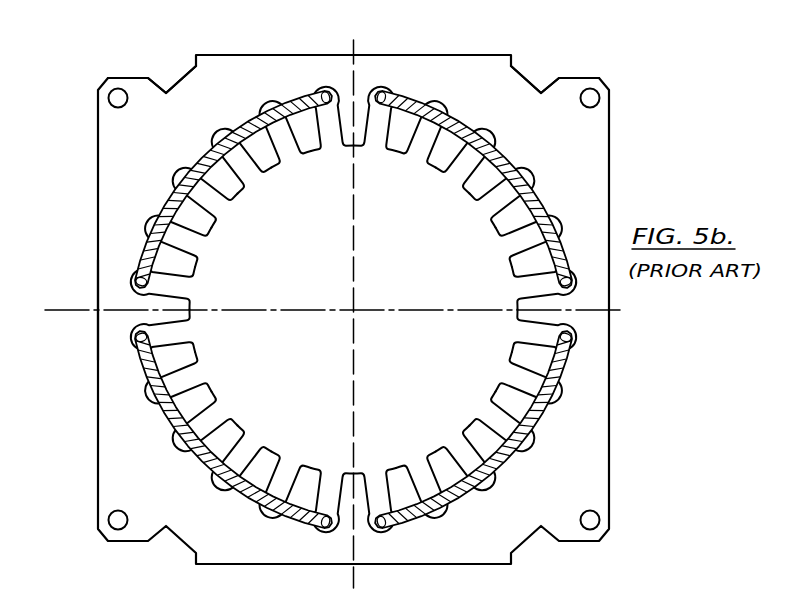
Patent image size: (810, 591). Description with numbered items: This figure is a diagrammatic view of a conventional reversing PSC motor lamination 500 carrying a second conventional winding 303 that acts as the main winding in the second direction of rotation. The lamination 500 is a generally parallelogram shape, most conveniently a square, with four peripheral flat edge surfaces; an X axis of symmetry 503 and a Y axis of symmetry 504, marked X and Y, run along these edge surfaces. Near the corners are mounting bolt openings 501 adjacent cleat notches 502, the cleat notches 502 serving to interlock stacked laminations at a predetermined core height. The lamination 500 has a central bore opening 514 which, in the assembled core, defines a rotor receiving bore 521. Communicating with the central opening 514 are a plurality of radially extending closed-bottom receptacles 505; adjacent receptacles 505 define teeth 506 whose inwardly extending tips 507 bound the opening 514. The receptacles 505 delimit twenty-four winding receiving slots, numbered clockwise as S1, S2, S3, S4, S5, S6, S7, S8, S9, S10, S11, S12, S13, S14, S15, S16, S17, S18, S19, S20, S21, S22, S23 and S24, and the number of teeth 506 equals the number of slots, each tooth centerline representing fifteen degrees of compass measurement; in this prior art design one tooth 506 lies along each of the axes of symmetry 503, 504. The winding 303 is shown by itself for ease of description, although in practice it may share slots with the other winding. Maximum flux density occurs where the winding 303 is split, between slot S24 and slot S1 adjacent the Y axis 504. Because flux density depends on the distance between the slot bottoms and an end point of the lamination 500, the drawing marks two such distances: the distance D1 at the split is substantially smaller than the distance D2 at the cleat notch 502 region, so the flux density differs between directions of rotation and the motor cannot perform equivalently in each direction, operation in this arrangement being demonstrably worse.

The lamination 500 is at (610, 196).
The mounting bolt openings 501 is at (112, 98).
The cleat notches 502 is at (180, 80).
The X axis of symmetry 503 is at (96, 300).
The Y axis of symmetry 504 is at (375, 55).
The receptacles 505 is at (543, 412).
The teeth 506 is at (487, 198).
The tips 507 is at (507, 354).
The winding 303 is at (258, 112).
The central bore opening 514 is at (422, 279).
The rotor receiving bore 521 is at (327, 332).
The distance D1 is at (377, 90).
The distance D2 is at (526, 84).
The X axis X is at (323, 310).
The Y axis Y is at (354, 42).
The slot S1 is at (372, 148).
The slot S2 is at (414, 162).
The slot S3 is at (450, 183).
The slot S4 is at (479, 211).
The slot S5 is at (509, 249).
The slot S6 is at (514, 289).
The slot S7 is at (515, 331).
The slot S8 is at (499, 369).
The slot S9 is at (487, 410).
The slot S10 is at (450, 436).
The slot S11 is at (415, 456).
The slot S12 is at (376, 461).
The slot S13 is at (331, 473).
The slot S14 is at (291, 463).
The slot S15 is at (256, 437).
The slot S16 is at (229, 407).
The slot S17 is at (206, 372).
The slot S18 is at (200, 330).
The slot S19 is at (193, 289).
The slot S20 is at (199, 246).
The slot S21 is at (227, 213).
The slot S22 is at (252, 181).
The slot S23 is at (300, 174).
The slot S24 is at (333, 153).